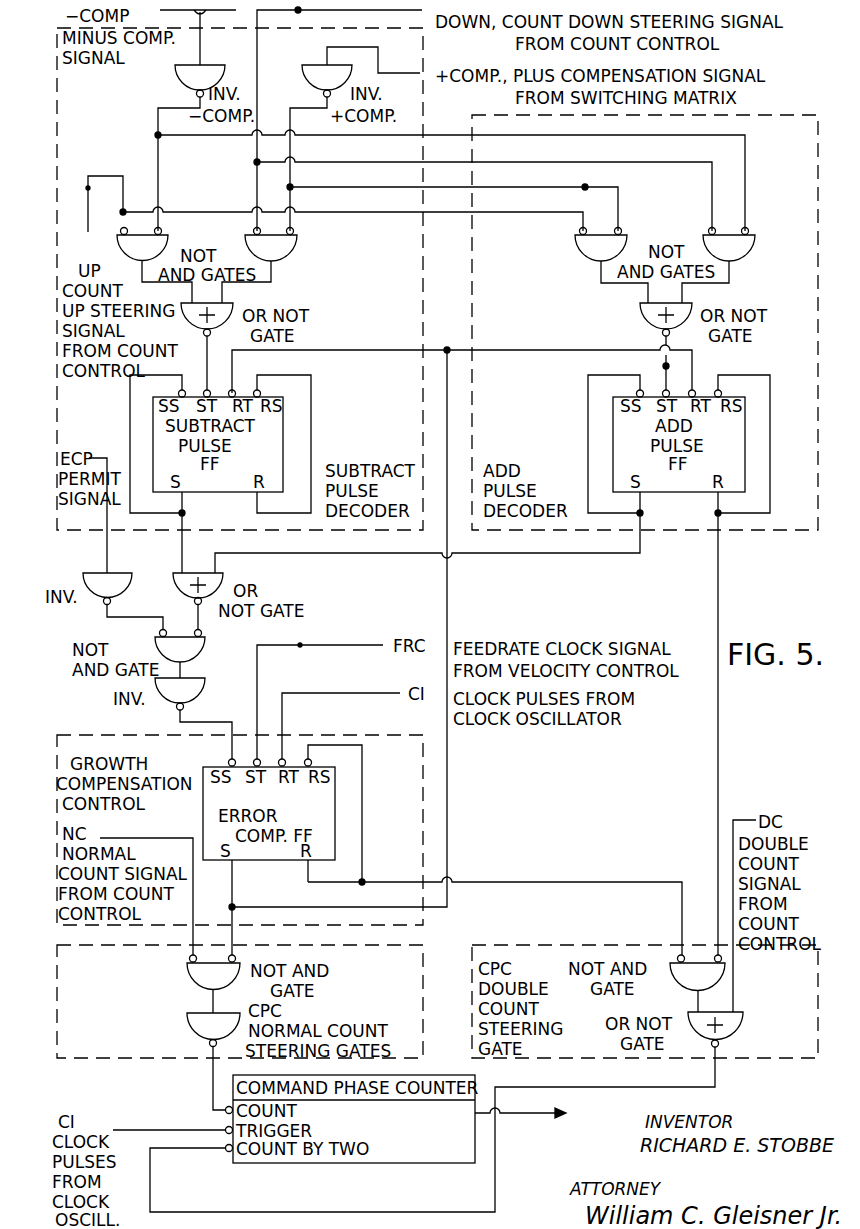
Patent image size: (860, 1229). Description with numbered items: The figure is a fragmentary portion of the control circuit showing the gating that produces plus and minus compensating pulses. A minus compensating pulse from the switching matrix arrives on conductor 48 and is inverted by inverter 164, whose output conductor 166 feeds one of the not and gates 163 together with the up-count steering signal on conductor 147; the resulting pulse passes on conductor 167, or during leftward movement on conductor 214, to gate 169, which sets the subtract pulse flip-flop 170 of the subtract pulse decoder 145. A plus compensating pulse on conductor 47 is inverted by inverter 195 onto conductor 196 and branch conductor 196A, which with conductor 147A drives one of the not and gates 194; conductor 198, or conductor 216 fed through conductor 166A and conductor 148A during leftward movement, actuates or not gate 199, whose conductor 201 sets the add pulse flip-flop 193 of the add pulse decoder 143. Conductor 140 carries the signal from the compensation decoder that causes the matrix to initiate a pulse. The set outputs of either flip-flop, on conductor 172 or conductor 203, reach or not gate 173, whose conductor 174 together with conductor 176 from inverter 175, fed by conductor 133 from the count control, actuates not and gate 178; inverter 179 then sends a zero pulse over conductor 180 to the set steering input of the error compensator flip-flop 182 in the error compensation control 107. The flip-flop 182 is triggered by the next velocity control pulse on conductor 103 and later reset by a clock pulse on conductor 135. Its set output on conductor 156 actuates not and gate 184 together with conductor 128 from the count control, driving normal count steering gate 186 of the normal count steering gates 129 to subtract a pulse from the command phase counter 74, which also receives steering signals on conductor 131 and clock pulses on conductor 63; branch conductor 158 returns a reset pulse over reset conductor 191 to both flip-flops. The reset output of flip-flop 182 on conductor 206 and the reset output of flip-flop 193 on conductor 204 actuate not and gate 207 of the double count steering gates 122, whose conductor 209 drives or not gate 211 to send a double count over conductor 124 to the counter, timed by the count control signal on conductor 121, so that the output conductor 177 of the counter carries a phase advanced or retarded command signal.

The conductor 48 is at (198, 37).
The conductor 140 is at (298, 12).
The conductor 47 is at (384, 73).
The signal inverter 164 is at (175, 72).
The inverter 195 is at (312, 66).
The output conductor 166 is at (159, 190).
The conductor 196 is at (292, 164).
The conductor 166A is at (742, 135).
The conductor 148A is at (626, 162).
The branch conductor 196A is at (586, 188).
The conductor 147 is at (86, 190).
The conductor 147A is at (336, 215).
The conductor 167 is at (141, 283).
The not and gates 163 is at (243, 251).
The conductor 214 is at (271, 282).
The gate 169 is at (240, 303).
The reset conductor 191 is at (484, 352).
The subtract pulse flip-flop 170 is at (235, 485).
The output conductor 133 is at (107, 547).
The conductor 172 is at (181, 538).
The or not gate 173 is at (180, 573).
The subtract pulse decoder 145 is at (356, 534).
The inverter 175 is at (90, 590).
The conductor 176 is at (164, 617).
The conductor 174 is at (201, 614).
The not and gate 178 is at (203, 648).
The conductor 103 is at (300, 646).
The conductor 135 is at (358, 693).
The inverter 179 is at (155, 700).
The conductor 180 is at (200, 722).
The error compensator flip-flop 182 is at (286, 863).
The conductor 206 is at (480, 883).
The branch conductor 158 is at (449, 816).
The output conductor 156 is at (232, 907).
The conductor 128 is at (178, 838).
The error compensation control 107 is at (62, 928).
The not and gate 184 is at (185, 973).
The normal count steering gate 186 is at (185, 1025).
The normal count steering gates 129 is at (165, 1060).
The conductor 131 is at (213, 1082).
The conductor 63 is at (138, 1130).
The command phase counter 74 is at (346, 1163).
The conductor 124 is at (425, 1212).
The command phase counter output 177 is at (542, 1113).
The conductor 198 is at (605, 284).
The not and gates 194 is at (700, 245).
The conductor 216 is at (725, 284).
The or not gate 199 is at (663, 338).
The conductor 201 is at (665, 367).
The add pulse flip-flop 193 is at (700, 490).
The conductor 203 is at (645, 553).
The add pulse decoder 143 is at (775, 534).
The conductor 204 is at (718, 575).
The output conductor 121 is at (740, 818).
The not and gate 207 is at (725, 985).
The conductor 209 is at (698, 1000).
The or not gate 211 is at (745, 1025).
The double count steering gates 122 is at (805, 1060).